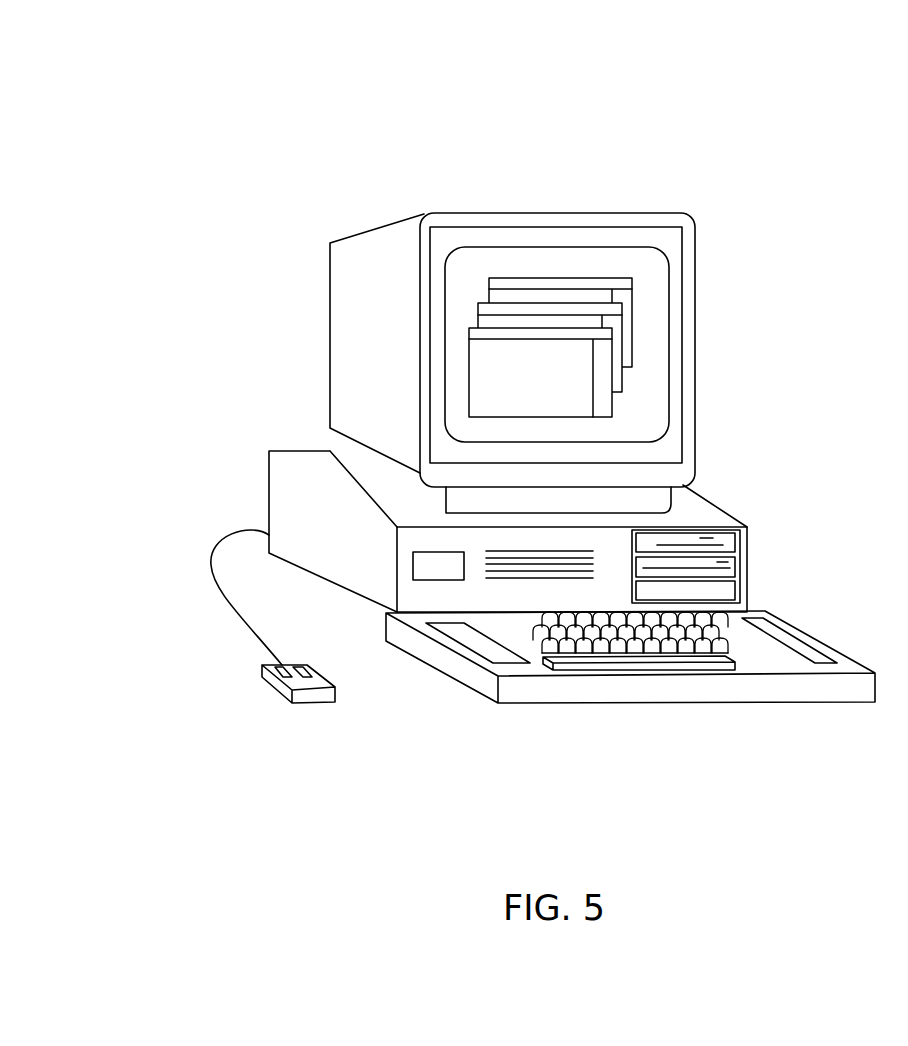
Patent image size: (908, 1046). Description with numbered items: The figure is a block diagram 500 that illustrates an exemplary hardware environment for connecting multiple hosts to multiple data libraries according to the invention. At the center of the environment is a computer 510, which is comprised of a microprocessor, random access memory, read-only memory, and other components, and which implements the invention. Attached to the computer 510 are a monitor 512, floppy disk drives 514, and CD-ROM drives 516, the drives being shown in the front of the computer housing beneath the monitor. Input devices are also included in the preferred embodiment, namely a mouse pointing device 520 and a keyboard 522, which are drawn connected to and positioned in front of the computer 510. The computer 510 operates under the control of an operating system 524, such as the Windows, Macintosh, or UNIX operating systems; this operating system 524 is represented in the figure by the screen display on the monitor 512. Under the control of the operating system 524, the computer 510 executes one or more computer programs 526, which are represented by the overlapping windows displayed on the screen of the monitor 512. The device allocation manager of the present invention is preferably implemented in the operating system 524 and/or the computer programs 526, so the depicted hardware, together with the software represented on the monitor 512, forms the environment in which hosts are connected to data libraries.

The block diagram 500 is at (713, 158).
The computer 510 is at (717, 503).
The monitor 512 is at (582, 215).
The floppy disk drives 514 is at (740, 562).
The CD-ROM drives 516 is at (733, 595).
The mouse pointing device 520 is at (267, 680).
The keyboard 522 is at (807, 690).
The operating system 524 is at (469, 265).
The computer programs 526 is at (660, 356).